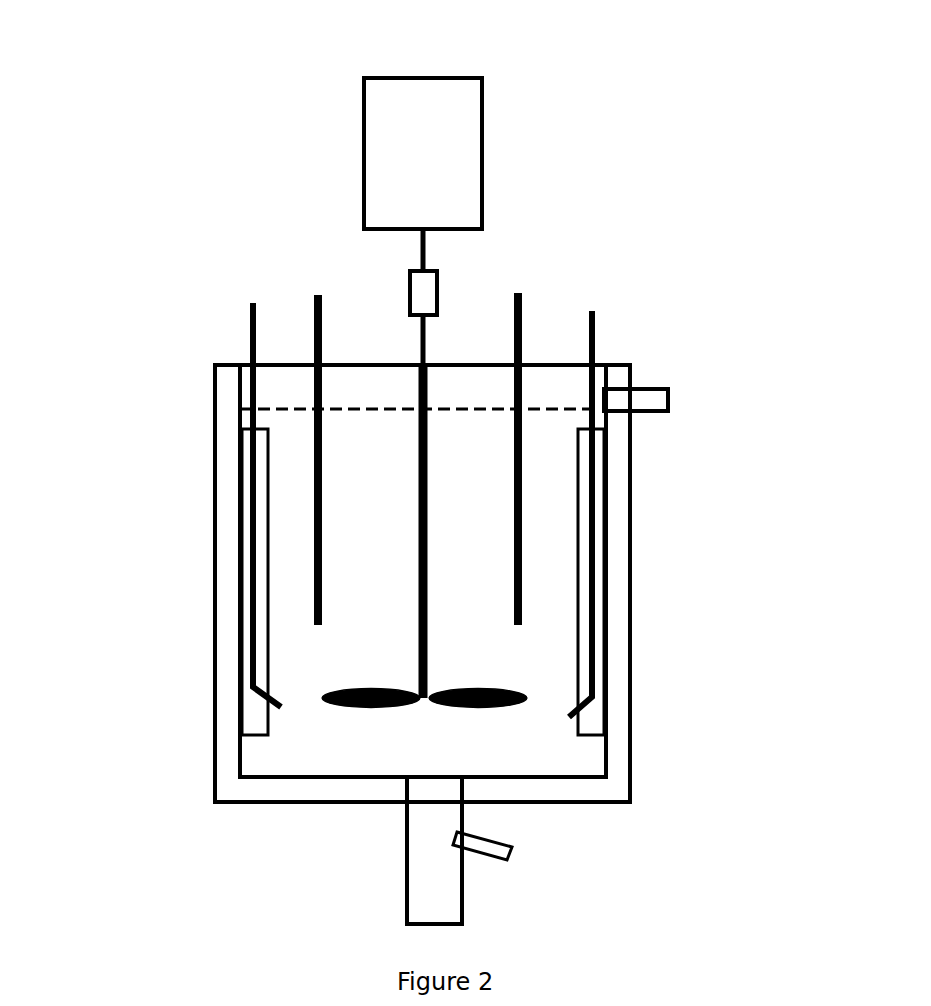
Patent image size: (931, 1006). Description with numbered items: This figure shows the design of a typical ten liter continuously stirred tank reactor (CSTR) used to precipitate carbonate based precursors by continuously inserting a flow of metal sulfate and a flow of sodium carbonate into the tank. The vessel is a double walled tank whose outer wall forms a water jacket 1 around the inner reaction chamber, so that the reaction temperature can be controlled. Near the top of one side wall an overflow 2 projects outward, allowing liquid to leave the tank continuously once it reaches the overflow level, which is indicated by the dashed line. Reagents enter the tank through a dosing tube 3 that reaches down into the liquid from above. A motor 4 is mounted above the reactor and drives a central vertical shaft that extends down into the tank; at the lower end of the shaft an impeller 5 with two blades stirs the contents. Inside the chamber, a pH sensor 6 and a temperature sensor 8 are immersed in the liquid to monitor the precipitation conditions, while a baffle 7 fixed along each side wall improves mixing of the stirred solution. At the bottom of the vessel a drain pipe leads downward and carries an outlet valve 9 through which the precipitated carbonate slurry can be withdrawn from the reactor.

The water jacket 1 is at (615, 578).
The overflow 2 is at (657, 399).
The dosing tube 3 is at (601, 306).
The motor 4 is at (468, 150).
The impeller 5 is at (347, 689).
The pH sensor 6 is at (313, 560).
The baffle 7 is at (245, 458).
The temperature sensor 8 is at (503, 453).
The outlet valve 9 is at (440, 853).